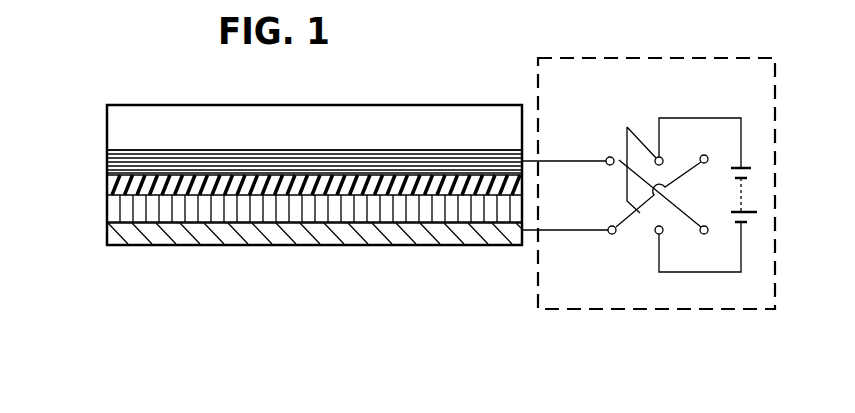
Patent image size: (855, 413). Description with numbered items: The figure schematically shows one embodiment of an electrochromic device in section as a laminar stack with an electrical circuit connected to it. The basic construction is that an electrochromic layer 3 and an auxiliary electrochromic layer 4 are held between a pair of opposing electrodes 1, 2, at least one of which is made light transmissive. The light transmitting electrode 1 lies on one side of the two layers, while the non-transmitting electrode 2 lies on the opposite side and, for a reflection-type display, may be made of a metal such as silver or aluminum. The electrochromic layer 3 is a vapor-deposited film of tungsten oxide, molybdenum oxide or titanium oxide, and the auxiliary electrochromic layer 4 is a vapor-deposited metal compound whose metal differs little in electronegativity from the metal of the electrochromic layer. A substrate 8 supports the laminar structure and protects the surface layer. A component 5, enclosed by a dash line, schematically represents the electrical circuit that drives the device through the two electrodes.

The substrate 8 is at (113, 129).
The light transmitting electrode 1 is at (110, 163).
The auxiliary electrochromic layer 4 is at (113, 185).
The electrochromic layer 3 is at (110, 210).
The non-transmitting electrode 2 is at (128, 237).
The component 5 is at (609, 302).